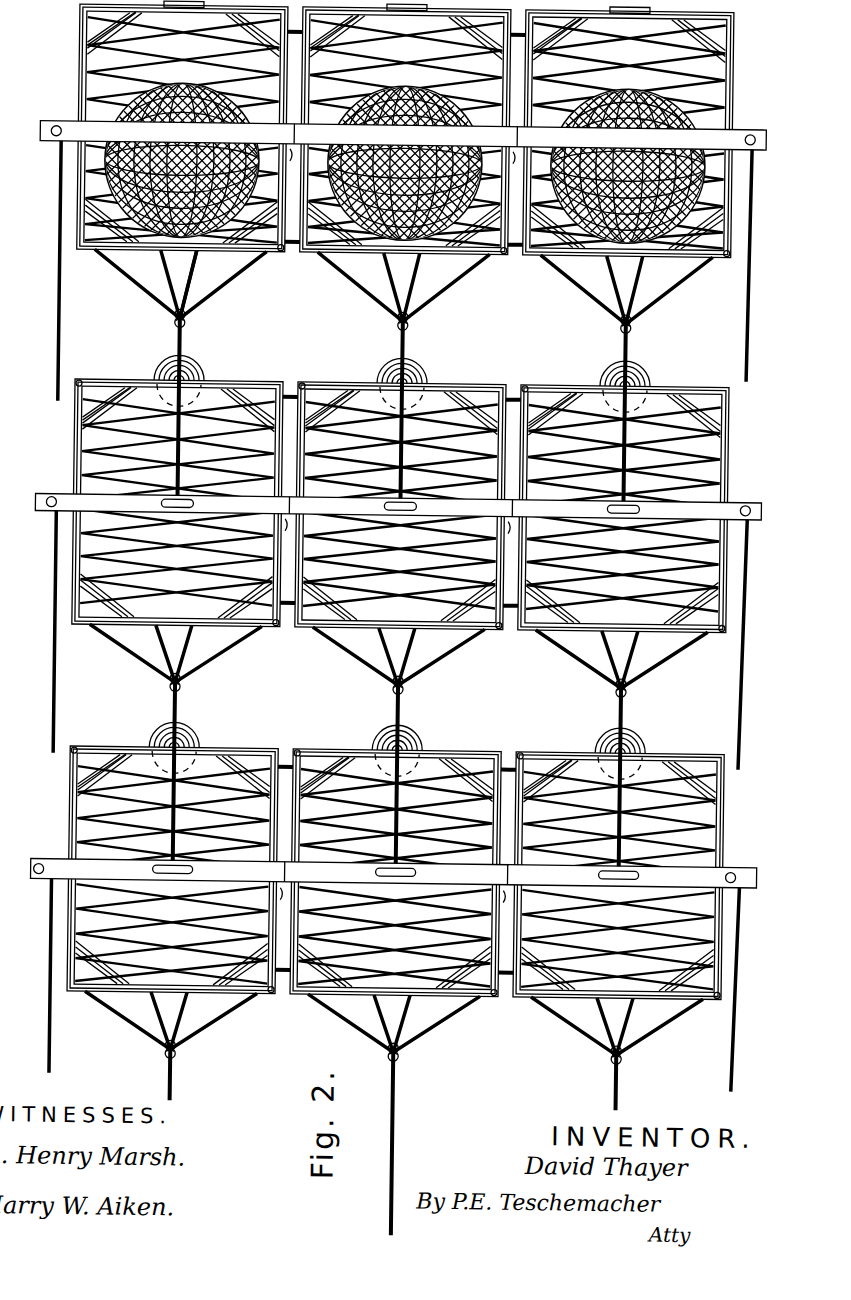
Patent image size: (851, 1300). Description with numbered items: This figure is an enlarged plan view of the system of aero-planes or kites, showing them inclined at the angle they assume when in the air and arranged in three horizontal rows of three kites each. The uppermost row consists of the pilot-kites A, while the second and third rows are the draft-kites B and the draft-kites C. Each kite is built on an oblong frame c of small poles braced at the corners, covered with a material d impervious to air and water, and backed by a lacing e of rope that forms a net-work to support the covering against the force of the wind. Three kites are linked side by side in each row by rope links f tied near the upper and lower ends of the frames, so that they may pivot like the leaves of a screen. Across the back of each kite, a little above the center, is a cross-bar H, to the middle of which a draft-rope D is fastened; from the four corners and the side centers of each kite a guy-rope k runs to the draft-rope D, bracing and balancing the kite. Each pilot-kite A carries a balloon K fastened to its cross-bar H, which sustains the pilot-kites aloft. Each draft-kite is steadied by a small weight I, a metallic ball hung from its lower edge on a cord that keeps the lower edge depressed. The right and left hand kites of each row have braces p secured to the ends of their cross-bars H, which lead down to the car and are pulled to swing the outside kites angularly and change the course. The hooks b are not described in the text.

The pilot-kite A is at (405, 129).
The draft-kite B is at (381, 505).
The draft-kite C is at (377, 872).
The cross-bar H is at (383, 503).
The covering d is at (400, 503).
The lacing e is at (570, 770).
The frame c is at (712, 626).
The guy-rope k is at (398, 667).
The balloon K is at (200, 284).
The draft-rope D is at (409, 1126).
The weight I is at (656, 752).
The brace p is at (752, 1000).
The hook b is at (397, 540).
The rope link f is at (388, 535).